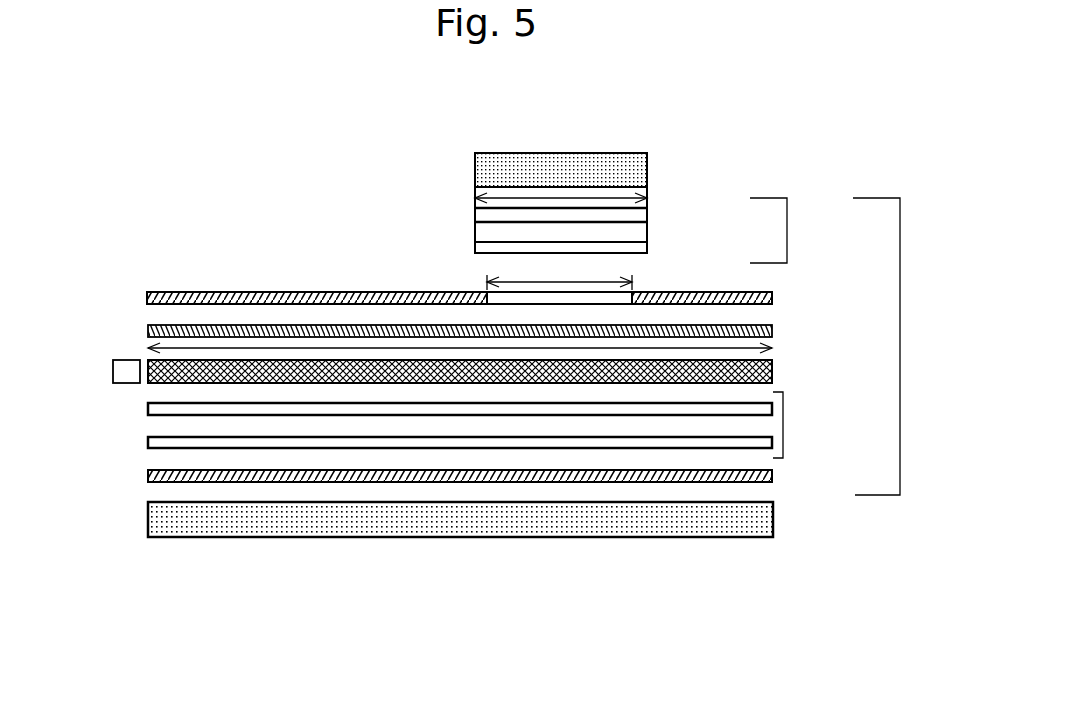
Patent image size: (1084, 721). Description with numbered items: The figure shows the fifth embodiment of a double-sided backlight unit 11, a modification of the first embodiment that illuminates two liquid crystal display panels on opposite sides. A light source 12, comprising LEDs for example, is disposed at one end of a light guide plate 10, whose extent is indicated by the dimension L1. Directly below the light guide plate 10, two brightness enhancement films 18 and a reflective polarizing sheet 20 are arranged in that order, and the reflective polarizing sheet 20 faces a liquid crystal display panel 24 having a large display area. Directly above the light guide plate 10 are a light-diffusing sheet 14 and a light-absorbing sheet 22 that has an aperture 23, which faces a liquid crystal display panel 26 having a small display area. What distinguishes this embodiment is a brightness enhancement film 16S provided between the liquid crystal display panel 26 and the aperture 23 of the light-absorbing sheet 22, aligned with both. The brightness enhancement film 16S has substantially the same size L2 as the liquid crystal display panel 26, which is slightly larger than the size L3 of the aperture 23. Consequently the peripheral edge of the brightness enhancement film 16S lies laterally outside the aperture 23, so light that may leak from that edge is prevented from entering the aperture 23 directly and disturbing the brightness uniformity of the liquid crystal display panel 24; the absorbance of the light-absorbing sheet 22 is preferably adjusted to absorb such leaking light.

The light guide plate 10 is at (772, 368).
The double-sided backlight unit 11 is at (900, 462).
The light source 12 is at (113, 375).
The light-diffusing sheet 14 is at (772, 329).
The brightness enhancement film 16S is at (787, 230).
The brightness enhancement films 18 is at (783, 430).
The reflective polarizing sheet 20 is at (772, 477).
The light-absorbing sheet 22 is at (347, 292).
The aperture 23 is at (567, 297).
The liquid crystal display panel 24 is at (773, 520).
The liquid crystal display panel 26 is at (647, 162).
The size of light guide plate L1 is at (217, 348).
The size of brightness enhancement film L2 is at (527, 198).
The size of aperture L3 is at (533, 282).